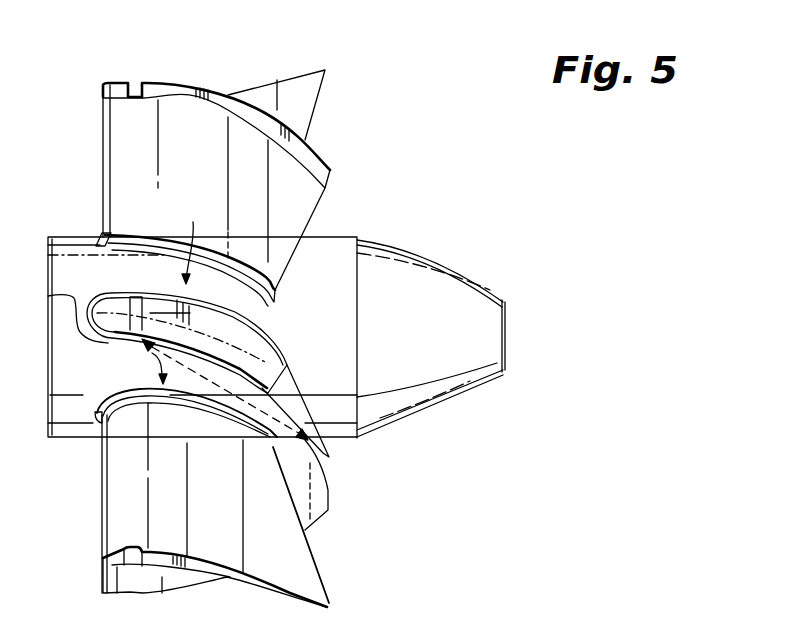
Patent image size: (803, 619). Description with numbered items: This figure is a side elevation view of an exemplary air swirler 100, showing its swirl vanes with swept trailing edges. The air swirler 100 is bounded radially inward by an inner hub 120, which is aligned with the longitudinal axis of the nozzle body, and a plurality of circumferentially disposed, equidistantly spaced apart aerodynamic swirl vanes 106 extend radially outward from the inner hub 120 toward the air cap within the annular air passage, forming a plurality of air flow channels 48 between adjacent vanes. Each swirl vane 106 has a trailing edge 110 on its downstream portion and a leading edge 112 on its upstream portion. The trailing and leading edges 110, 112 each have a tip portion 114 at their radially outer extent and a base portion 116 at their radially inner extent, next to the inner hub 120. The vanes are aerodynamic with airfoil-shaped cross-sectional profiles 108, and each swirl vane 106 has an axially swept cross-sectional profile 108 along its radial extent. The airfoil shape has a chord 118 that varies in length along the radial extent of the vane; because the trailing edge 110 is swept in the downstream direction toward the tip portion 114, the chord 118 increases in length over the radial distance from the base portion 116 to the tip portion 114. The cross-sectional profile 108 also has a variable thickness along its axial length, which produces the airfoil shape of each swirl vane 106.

The air swirler 100 is at (496, 187).
The air flow channels 48 is at (213, 325).
The swirl vane 106 is at (128, 152).
The cross-sectional profile 108 is at (218, 100).
The trailing edge 110 is at (323, 198).
The leading edge 112 is at (102, 102).
The tip portion 114 is at (160, 84).
The base portion 116 is at (100, 234).
The chord 118 is at (48, 297).
The inner hub 120 is at (467, 392).